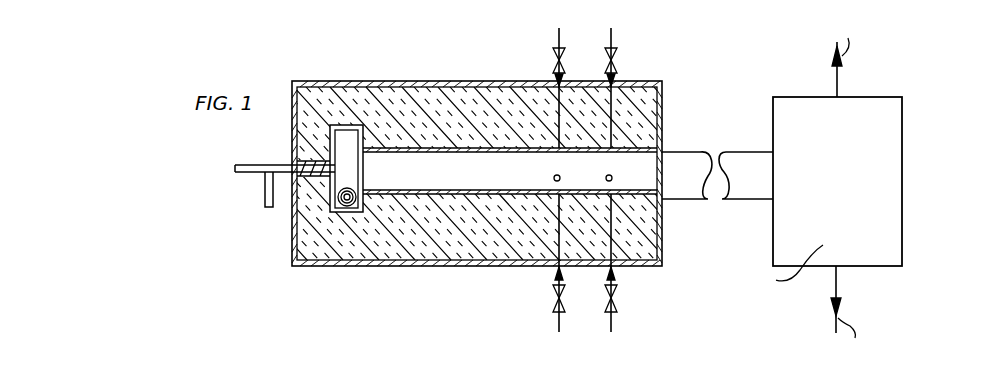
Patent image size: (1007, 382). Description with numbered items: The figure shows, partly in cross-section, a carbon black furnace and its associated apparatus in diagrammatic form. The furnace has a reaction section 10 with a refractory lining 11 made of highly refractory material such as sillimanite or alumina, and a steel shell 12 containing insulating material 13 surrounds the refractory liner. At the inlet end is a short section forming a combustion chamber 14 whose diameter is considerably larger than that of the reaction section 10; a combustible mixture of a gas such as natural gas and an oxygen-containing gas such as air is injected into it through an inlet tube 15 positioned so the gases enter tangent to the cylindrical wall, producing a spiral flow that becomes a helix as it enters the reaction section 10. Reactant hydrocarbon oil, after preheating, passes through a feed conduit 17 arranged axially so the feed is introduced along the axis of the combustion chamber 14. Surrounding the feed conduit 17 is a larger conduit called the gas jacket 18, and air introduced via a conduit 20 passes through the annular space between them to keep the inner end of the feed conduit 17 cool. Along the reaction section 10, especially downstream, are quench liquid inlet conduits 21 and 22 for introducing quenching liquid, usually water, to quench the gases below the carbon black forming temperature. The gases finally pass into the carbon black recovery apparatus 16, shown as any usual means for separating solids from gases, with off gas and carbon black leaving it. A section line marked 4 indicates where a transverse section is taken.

The section line 4- 4 is at (385, 33).
The reaction section 10 is at (437, 180).
The refractory lining 11 is at (470, 155).
The steel shell 12 is at (475, 82).
The insulating material 13 is at (448, 93).
The combustion chamber 14 is at (346, 168).
The inlet tube 15 is at (346, 188).
The carbon black recovery apparatus 16 is at (775, 108).
The feed conduit 17 is at (242, 166).
The gas jacket 18 is at (271, 162).
The conduit 20 is at (263, 193).
The quench liquid inlet conduit 21 is at (556, 318).
The quench liquid inlet conduit 22 is at (611, 320).